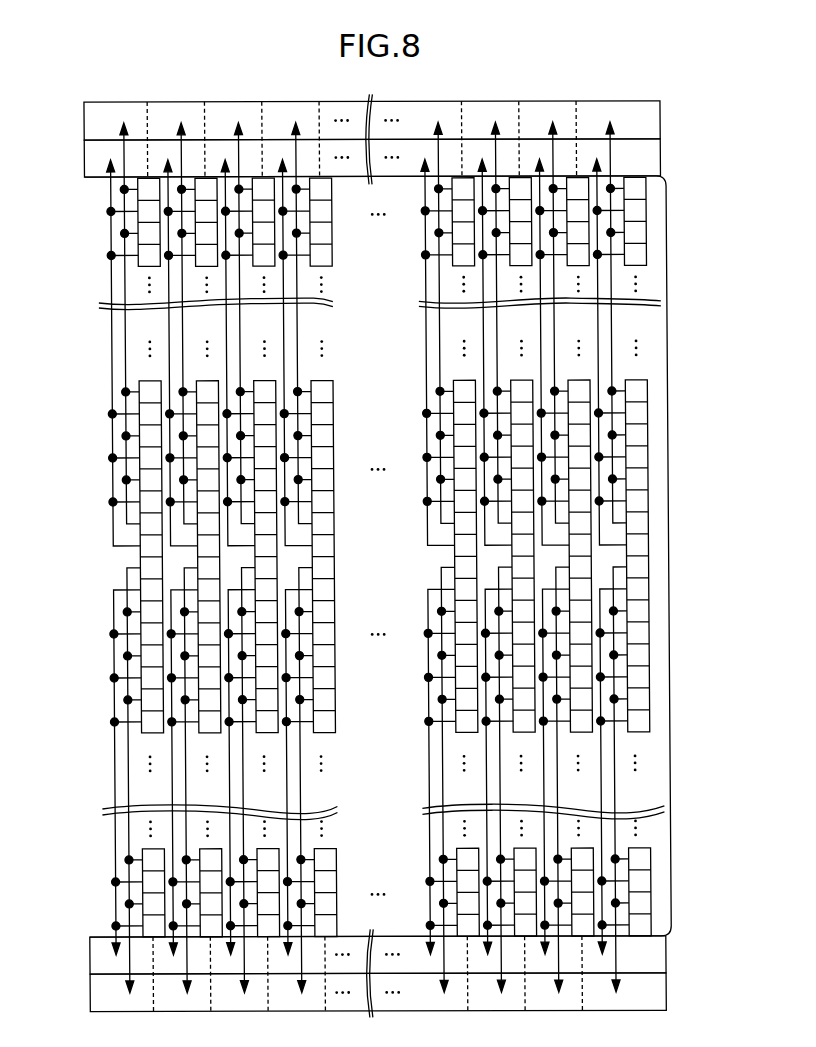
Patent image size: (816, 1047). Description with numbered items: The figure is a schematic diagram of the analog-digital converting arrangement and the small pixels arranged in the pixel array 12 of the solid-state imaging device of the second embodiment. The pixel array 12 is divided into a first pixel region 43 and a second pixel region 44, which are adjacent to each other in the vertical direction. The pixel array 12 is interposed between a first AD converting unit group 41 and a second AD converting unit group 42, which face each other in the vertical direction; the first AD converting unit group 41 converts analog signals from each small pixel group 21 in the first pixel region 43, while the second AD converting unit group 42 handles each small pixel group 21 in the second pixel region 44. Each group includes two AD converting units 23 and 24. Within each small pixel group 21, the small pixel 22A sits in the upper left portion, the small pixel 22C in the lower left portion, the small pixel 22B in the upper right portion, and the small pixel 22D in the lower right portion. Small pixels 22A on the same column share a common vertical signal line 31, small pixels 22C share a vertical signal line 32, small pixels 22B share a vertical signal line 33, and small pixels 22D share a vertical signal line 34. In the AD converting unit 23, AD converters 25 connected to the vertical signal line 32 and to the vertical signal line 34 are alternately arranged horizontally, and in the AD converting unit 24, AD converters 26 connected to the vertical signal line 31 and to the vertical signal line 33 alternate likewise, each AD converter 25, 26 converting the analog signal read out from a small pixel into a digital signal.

The pixel array 12 is at (686, 233).
The small pixel group 21 is at (50, 197).
The small pixel 22A is at (138, 190).
The small pixel 22B is at (195, 190).
The small pixel 22C is at (138, 212).
The small pixel 22D is at (195, 212).
The AD converting unit 23 is at (668, 163).
The AD converting unit 24 is at (668, 123).
The AD converter 25 is at (84, 157).
The AD converter 26 is at (84, 122).
The vertical signal line 31 is at (124, 322).
The vertical signal line 32 is at (111, 332).
The vertical signal line 33 is at (182, 363).
The vertical signal line 34 is at (168, 367).
The first AD converting unit group 41 is at (717, 937).
The second AD converting unit group 42 is at (718, 103).
The first pixel region 43 is at (656, 555).
The second pixel region 44 is at (656, 177).